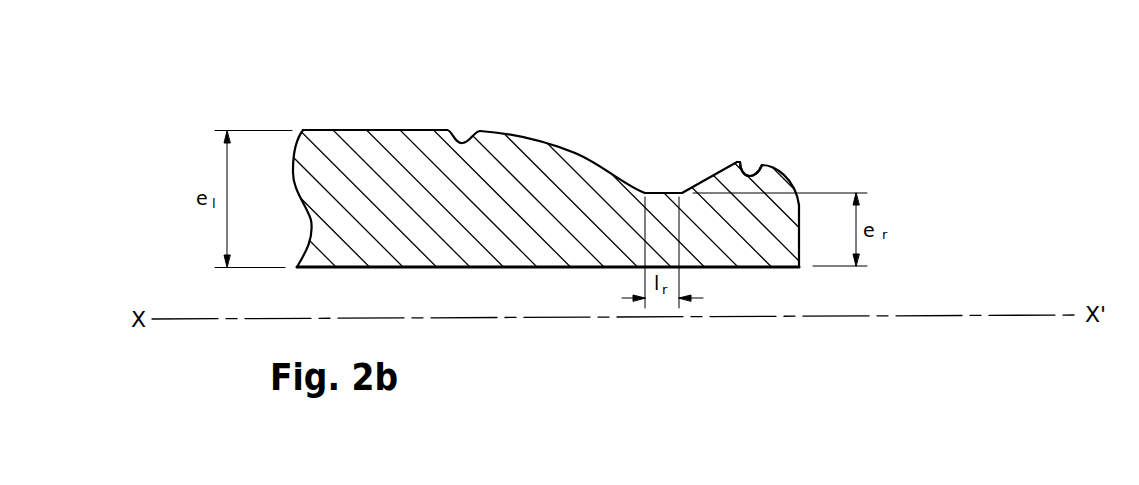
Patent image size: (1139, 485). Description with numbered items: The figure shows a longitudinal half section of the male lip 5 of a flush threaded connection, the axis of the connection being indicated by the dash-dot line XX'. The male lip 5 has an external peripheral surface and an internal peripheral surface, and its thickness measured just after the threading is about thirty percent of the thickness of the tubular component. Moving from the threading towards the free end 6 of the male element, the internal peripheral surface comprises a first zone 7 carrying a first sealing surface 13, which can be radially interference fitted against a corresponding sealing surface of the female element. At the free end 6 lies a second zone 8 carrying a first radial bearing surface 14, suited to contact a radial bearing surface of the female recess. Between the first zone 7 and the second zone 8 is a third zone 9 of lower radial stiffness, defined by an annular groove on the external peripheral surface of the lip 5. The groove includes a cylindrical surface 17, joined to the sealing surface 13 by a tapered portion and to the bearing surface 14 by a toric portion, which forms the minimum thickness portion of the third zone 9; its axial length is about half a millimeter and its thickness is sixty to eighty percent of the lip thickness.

The male lip 5 is at (292, 183).
The free end 6 is at (800, 232).
The first zone 7 is at (420, 109).
The second zone 8 is at (762, 148).
The third zone 9 is at (655, 156).
The first sealing surface 13 is at (463, 143).
The first radial bearing surface 14 is at (752, 176).
The cylindrical surface 17 is at (660, 192).